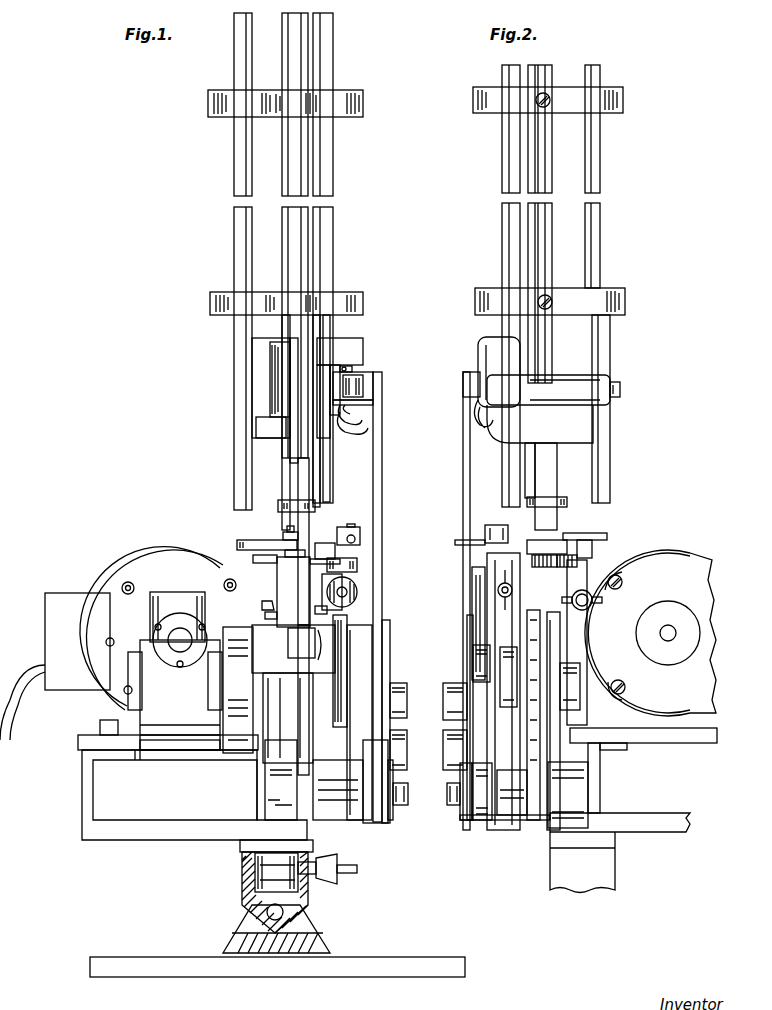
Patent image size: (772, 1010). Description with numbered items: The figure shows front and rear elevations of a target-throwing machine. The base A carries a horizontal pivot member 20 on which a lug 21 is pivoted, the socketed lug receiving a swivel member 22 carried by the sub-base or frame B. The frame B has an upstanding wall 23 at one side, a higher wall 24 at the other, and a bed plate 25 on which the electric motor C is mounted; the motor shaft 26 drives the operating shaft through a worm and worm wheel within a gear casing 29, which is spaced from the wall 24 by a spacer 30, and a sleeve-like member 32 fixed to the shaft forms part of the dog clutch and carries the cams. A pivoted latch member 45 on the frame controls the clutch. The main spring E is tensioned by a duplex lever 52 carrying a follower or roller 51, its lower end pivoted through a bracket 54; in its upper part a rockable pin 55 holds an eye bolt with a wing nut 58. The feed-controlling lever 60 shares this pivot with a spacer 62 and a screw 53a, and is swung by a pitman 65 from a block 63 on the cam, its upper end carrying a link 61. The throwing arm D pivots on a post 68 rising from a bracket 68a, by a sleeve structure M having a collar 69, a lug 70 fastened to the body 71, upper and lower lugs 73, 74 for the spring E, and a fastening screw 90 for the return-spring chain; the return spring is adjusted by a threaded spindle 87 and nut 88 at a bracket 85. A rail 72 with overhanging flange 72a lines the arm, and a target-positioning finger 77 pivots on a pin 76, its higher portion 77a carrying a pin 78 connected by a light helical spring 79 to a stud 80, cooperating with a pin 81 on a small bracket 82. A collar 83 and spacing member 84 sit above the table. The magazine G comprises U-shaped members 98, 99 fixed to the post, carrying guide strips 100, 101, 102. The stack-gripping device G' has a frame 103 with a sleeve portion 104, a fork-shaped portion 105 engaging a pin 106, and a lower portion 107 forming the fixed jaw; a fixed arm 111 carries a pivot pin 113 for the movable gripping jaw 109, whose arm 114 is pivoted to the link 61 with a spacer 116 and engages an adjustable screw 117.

In FIG. 1, the U-shaped member 98 is at (363, 101).
In FIG. 2, the U-shaped member 98 is at (623, 101).
In FIG. 1, the post or spindle 68 is at (295, 172).
In FIG. 2, the post or spindle 68 is at (532, 158).
In FIG. 1, the guide strip 100 is at (234, 238).
In FIG. 2, the guide strip 100 is at (600, 222).
In FIG. 2, the guide strip 101 is at (548, 232).
In FIG. 1, the guide strip 102 is at (330, 248).
In FIG. 2, the guide strip 102 is at (502, 238).
In FIG. 1, the U-shaped member 99 is at (363, 294).
In FIG. 2, the U-shaped member 99 is at (612, 292).
In FIG. 1, the target magazine G is at (345, 227).
In FIG. 2, the target magazine G is at (638, 297).
In FIG. 2, the stack-gripping device G' is at (624, 371).
In FIG. 1, the fork-shaped portion 105 is at (317, 345).
In FIG. 1, the frame 103 is at (252, 350).
In FIG. 1, the screw 117 is at (348, 366).
In FIG. 1, the sleeve portion 104 is at (283, 380).
In FIG. 1, the spacer 116 is at (363, 385).
In FIG. 2, the spacer 116 is at (470, 372).
In FIG. 1, the pin 106 is at (302, 395).
In FIG. 1, the arm 114 is at (357, 420).
In FIG. 2, the arm 114 is at (478, 408).
In FIG. 1, the lower portion 107 is at (265, 428).
In FIG. 1, the link 61 is at (378, 455).
In FIG. 2, the link 61 is at (465, 484).
In FIG. 1, the collar 83 is at (280, 500).
In FIG. 2, the collar 83 is at (557, 500).
In FIG. 1, the spacing member 84 is at (283, 512).
In FIG. 2, the spacing member 84 is at (562, 507).
In FIG. 1, the overhanging flange 72a is at (350, 524).
In FIG. 1, the target-positioning finger 77 is at (243, 548).
In FIG. 1, the pin 76 is at (285, 536).
In FIG. 1, the body of the throwing arm 71 is at (325, 543).
In FIG. 2, the body of the throwing arm 71 is at (510, 540).
In FIG. 1, the rail 72 is at (360, 540).
In FIG. 1, the sleeve structure M is at (277, 585).
In FIG. 1, the electric motor C is at (145, 572).
In FIG. 2, the electric motor C is at (698, 730).
In FIG. 1, the throwing arm D is at (318, 547).
In FIG. 2, the throwing arm D is at (510, 543).
In FIG. 1, the upper lug 73 is at (340, 565).
In FIG. 1, the main throwing arm spring E is at (358, 594).
In FIG. 1, the fastening screw 90 is at (262, 606).
In FIG. 1, the lower lug 74 is at (345, 606).
In FIG. 1, the pin 81 is at (265, 617).
In FIG. 1, the block 63 is at (377, 718).
In FIG. 1, the bracket 68a is at (290, 645).
In FIG. 1, the collar or flange 69 is at (318, 642).
In FIG. 1, the bracket 82 is at (293, 662).
In FIG. 1, the pitman or connecting rod 65 is at (377, 728).
In FIG. 1, the bed plate 25 is at (80, 742).
In FIG. 2, the bed plate 25 is at (690, 737).
In FIG. 1, the gear casing 29 is at (167, 742).
In FIG. 1, the spacer 30 is at (235, 742).
In FIG. 1, the wall 24 is at (252, 752).
In FIG. 2, the wall 24 is at (600, 784).
In FIG. 1, the upstanding wall 23 is at (84, 797).
In FIG. 1, the latch member 45 is at (300, 790).
In FIG. 1, the sub-base or frame B is at (165, 833).
In FIG. 2, the sub-base or frame B is at (692, 828).
In FIG. 1, the swivel member 22 is at (260, 872).
In FIG. 1, the lug 21 is at (310, 895).
In FIG. 2, the lug 21 is at (607, 878).
In FIG. 1, the horizontal pivot member 20 is at (310, 921).
In FIG. 1, the base A is at (110, 962).
In FIG. 1, the spacer 62 is at (373, 823).
In FIG. 2, the spacer 62 is at (481, 821).
In FIG. 1, the lever 60 is at (392, 822).
In FIG. 2, the lever 60 is at (466, 823).
In FIG. 1, the screw 53a is at (403, 806).
In FIG. 2, the screw 53a is at (452, 806).
In FIG. 2, the fixed arm 111 is at (480, 343).
In FIG. 2, the pivot pin 113 is at (622, 390).
In FIG. 2, the movable gripping jaw 109 is at (580, 422).
In FIG. 2, the arm or lug 70 is at (548, 550).
In FIG. 2, the higher portion 77a is at (607, 537).
In FIG. 2, the pin 78 is at (592, 552).
In FIG. 2, the rockable pin 55 is at (478, 588).
In FIG. 2, the wing nut 58 is at (498, 604).
In FIG. 2, the stud 80 is at (542, 568).
In FIG. 2, the light helical spring 79 is at (568, 568).
In FIG. 2, the nut 88 is at (622, 588).
In FIG. 2, the threaded spindle 87 is at (592, 605).
In FIG. 2, the lever 52 is at (490, 620).
In FIG. 2, the follower or roller 51 is at (520, 670).
In FIG. 2, the motor shaft 26 is at (672, 633).
In FIG. 2, the sleeve-like member 32 is at (582, 690).
In FIG. 2, the bracket 85 is at (625, 687).
In FIG. 2, the bracket 54 is at (562, 810).